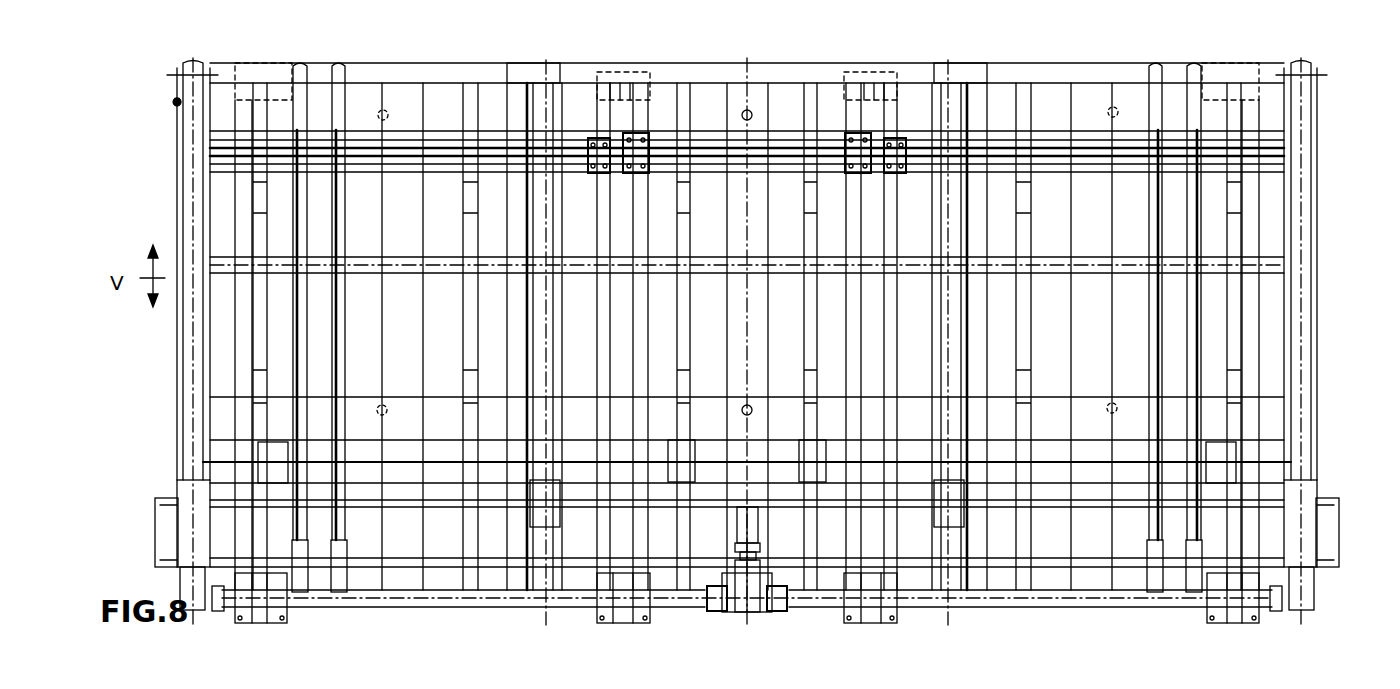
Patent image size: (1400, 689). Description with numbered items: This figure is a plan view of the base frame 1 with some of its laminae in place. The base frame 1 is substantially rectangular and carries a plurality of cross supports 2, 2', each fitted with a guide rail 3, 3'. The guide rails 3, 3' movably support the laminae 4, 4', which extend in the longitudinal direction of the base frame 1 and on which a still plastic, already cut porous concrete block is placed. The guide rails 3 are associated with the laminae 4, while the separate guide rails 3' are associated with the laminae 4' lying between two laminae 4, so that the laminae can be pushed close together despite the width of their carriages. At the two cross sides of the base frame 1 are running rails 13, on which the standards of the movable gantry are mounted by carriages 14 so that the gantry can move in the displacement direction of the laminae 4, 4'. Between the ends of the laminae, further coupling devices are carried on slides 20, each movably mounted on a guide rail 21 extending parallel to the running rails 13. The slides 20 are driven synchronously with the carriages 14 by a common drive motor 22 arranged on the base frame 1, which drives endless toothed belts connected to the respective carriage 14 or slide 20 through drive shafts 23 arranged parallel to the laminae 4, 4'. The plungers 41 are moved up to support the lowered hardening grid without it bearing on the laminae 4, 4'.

The base frame 1 is at (1106, 58).
The cross support 2 is at (482, 338).
The cross support 2' is at (535, 338).
The guide rail 3 is at (300, 305).
The guide rail 3' is at (347, 305).
The lamina 4 is at (787, 124).
The lamina 4' is at (788, 168).
The running rail 13 is at (190, 428).
The carriage 14 is at (183, 551).
The slide 20 is at (545, 517).
The guide rail 21 is at (548, 98).
The drive motor 22 is at (760, 528).
The drive shaft 23 is at (431, 607).
The plunger 41 is at (389, 115).